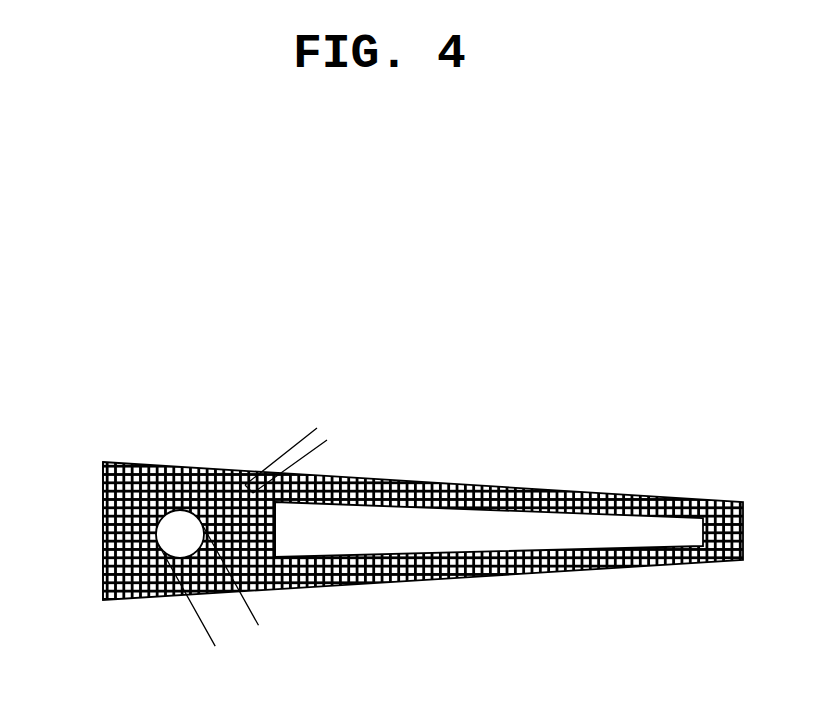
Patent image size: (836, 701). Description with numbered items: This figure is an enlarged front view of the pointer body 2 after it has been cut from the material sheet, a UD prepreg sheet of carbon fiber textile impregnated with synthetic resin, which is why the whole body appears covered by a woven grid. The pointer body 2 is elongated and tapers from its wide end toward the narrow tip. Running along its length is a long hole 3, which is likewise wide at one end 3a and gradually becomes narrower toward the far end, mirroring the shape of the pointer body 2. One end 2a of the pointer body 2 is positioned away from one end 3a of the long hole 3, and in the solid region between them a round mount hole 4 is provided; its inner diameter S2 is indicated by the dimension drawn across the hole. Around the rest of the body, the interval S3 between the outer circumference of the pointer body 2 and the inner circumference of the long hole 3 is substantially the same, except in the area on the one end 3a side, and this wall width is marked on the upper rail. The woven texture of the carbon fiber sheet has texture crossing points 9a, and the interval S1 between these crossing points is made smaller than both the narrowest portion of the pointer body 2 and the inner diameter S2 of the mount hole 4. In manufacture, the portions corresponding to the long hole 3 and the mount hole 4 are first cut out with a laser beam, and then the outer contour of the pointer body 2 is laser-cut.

The pointer body 2 is at (115, 443).
The one end of the pointer body 2a is at (102, 532).
The long hole 3 is at (590, 528).
The one end of the long hole 3a is at (277, 542).
The mount hole 4 is at (177, 527).
The texture crossing points 9a is at (248, 485).
The interval between the texture crossing points S1 is at (285, 415).
The inner diameter of the mount hole S2 is at (249, 608).
The interval between the outer circumference of the pointer body and the inner circu S3 is at (513, 537).